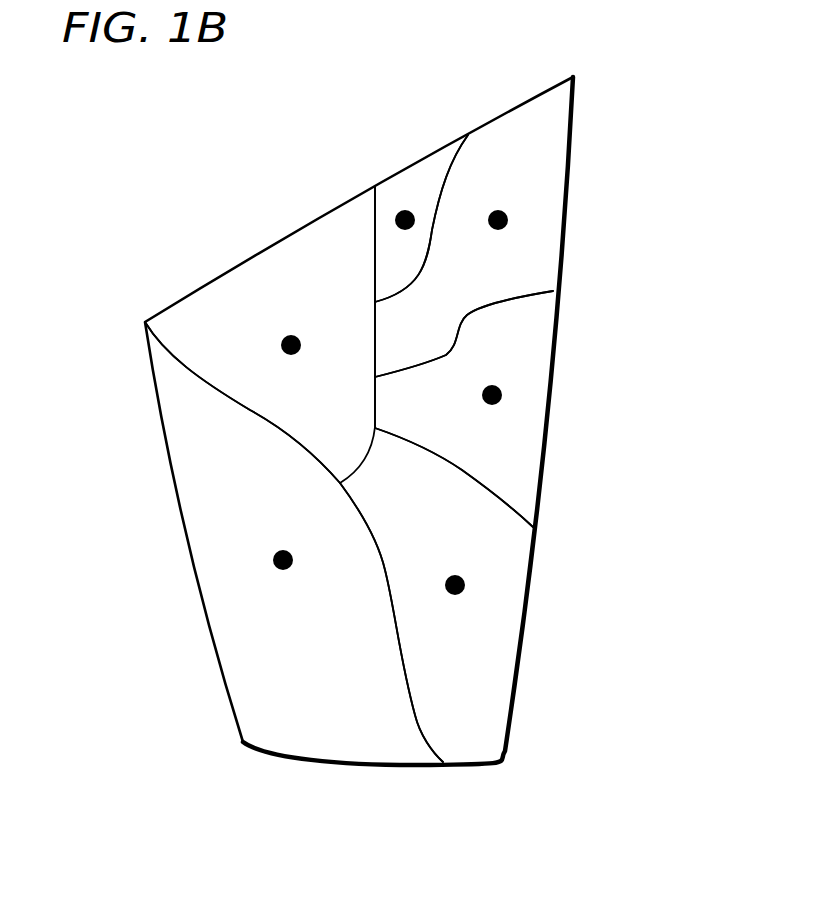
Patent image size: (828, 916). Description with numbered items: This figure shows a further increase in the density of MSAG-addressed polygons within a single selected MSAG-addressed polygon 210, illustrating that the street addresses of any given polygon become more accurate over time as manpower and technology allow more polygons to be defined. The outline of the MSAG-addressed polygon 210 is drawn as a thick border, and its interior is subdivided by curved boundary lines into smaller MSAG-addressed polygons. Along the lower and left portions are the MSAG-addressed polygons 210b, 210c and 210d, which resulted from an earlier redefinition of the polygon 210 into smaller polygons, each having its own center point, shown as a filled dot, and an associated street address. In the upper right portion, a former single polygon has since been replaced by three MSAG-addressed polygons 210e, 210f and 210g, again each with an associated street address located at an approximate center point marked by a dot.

The MSAG-addressed polygon 210 is at (598, 130).
The MSAG-addressed polygon 210b is at (505, 632).
The MSAG-addressed polygon 210c is at (240, 639).
The MSAG-addressed polygon 210d is at (230, 285).
The MSAG-addressed polygon 210e is at (420, 177).
The MSAG-addressed polygon 210f is at (545, 222).
The MSAG-addressed polygon 210g is at (526, 444).